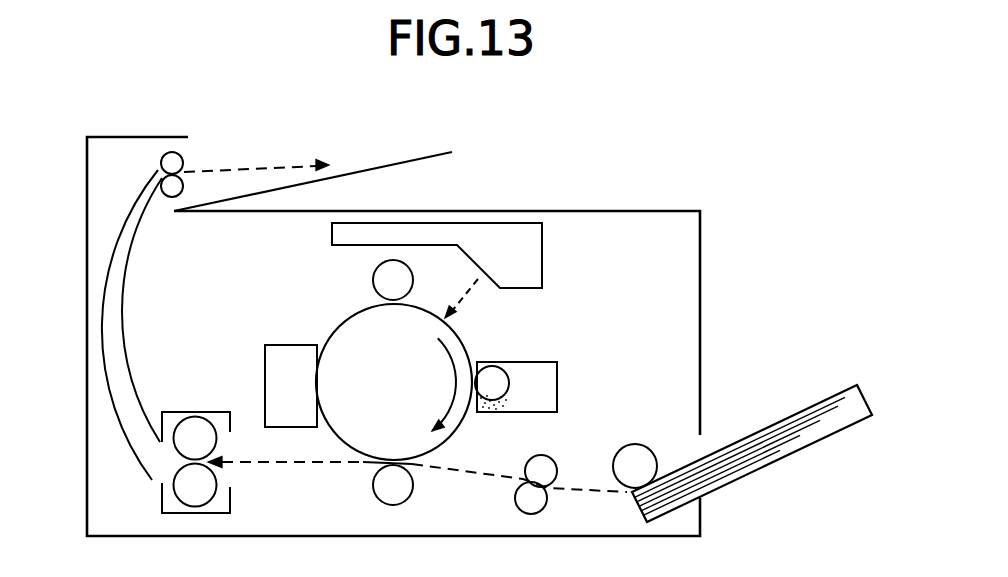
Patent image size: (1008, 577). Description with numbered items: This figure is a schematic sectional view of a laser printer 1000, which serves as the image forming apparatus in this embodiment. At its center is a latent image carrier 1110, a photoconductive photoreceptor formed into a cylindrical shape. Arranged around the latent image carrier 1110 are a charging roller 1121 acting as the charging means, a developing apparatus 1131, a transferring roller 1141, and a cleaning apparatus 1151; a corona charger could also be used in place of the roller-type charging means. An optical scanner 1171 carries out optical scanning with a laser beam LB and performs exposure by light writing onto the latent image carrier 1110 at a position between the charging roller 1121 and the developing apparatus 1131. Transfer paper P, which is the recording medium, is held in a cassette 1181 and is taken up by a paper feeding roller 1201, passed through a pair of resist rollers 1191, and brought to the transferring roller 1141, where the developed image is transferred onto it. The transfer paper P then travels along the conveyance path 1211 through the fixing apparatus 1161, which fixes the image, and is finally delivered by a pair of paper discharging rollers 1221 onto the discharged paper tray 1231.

The laser printer 1000 is at (701, 158).
The latent image carrier 1110 is at (423, 408).
The charging roller 1121 is at (373, 277).
The developing apparatus 1131 is at (557, 375).
The transferring roller 1141 is at (413, 495).
The cleaning apparatus 1151 is at (292, 345).
The fixing apparatus 1161 is at (230, 492).
The optical scanner 1171 is at (542, 256).
The cassette 1181 is at (755, 473).
The pair of resist rollers 1191 is at (547, 508).
The paper feeding roller 1201 is at (652, 427).
The conveyance path 1211 is at (102, 338).
The pair of paper discharging rollers 1221 is at (161, 166).
The discharged paper tray 1231 is at (390, 164).
The laser beam LB is at (477, 279).
The transfer paper P is at (755, 432).